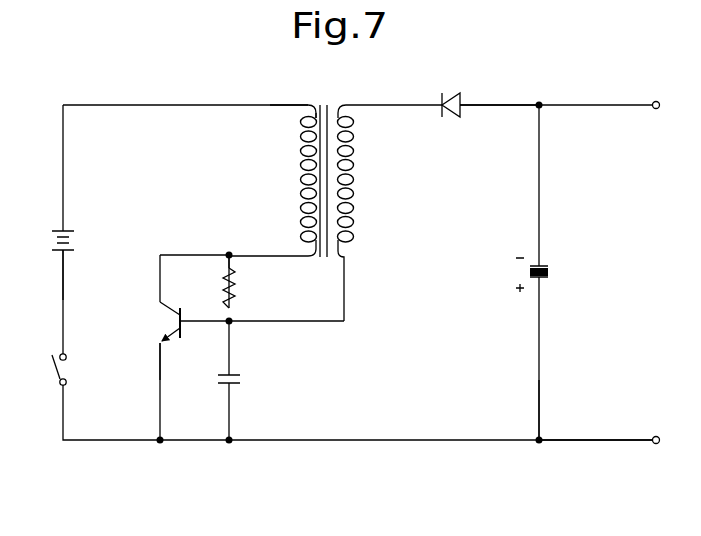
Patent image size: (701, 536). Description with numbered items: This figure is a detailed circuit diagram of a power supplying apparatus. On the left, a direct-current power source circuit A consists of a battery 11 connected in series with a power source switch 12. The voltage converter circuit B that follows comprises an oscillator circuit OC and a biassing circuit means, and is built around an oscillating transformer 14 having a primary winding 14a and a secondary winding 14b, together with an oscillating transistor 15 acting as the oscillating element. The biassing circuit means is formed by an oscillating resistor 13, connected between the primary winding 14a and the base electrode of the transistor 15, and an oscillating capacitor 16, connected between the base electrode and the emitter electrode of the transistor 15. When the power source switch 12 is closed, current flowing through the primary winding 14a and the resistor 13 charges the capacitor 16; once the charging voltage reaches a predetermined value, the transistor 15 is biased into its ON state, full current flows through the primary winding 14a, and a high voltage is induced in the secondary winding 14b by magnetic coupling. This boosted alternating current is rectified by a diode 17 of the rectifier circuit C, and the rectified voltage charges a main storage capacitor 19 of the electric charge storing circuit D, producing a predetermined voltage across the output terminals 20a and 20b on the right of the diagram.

The battery 11 is at (66, 230).
The power source switch 12 is at (61, 374).
The oscillating resistor 13 is at (235, 296).
The oscillating transformer 14 is at (335, 190).
The primary winding 14a is at (300, 206).
The secondary winding 14b is at (354, 222).
The oscillating transistor 15 is at (162, 310).
The oscillating capacitor 16 is at (238, 382).
The diode 17 is at (441, 101).
The main storage capacitor 19 is at (543, 275).
The output terminal 20a is at (657, 101).
The output terminal 20b is at (658, 443).
The oscillator circuit OC is at (262, 138).
The direct-current power source circuit A is at (60, 256).
The voltage converter circuit B is at (278, 100).
The rectifier circuit C is at (466, 93).
The electric charge storing circuit D is at (531, 392).